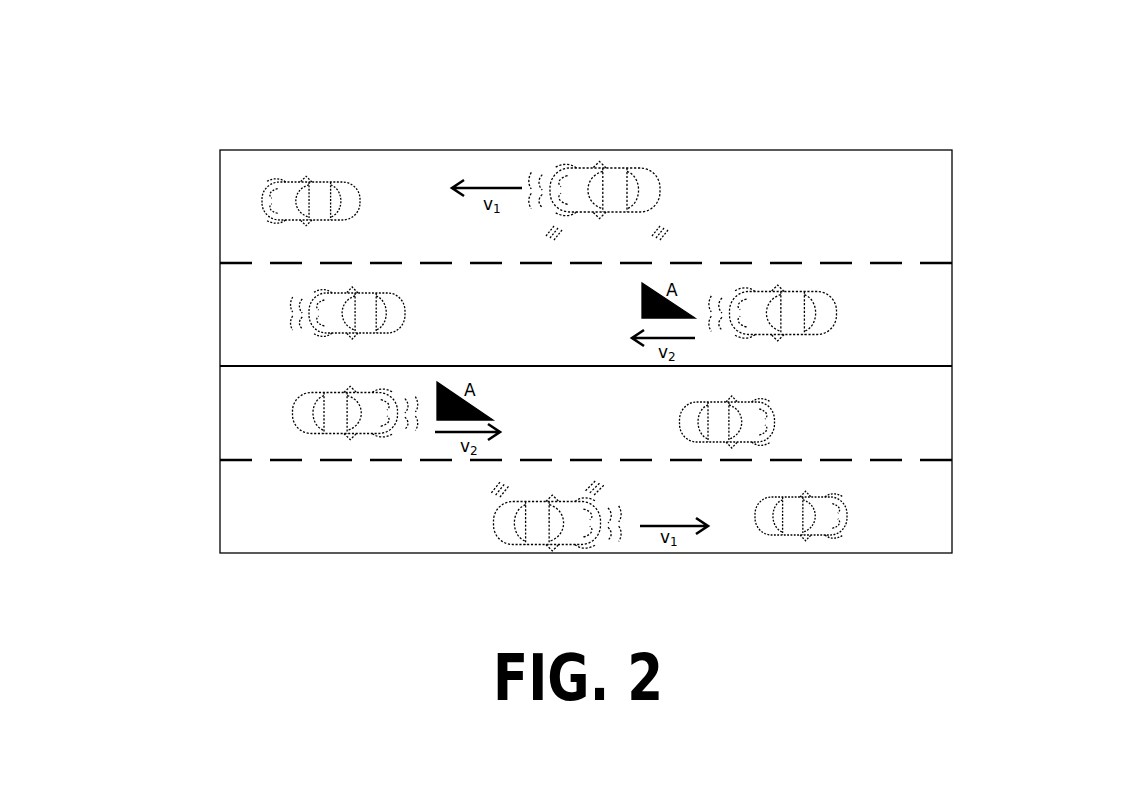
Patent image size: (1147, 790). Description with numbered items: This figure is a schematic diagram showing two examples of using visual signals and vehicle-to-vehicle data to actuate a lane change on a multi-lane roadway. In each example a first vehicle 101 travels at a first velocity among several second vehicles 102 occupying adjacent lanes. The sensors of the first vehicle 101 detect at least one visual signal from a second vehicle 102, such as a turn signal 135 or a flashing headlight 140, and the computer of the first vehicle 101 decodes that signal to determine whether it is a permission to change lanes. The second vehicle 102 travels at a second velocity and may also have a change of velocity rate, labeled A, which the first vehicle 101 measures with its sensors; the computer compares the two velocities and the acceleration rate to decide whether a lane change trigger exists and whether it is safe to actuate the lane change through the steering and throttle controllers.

The first vehicle 101 is at (615, 162).
The second vehicle 102 is at (332, 182).
The turn signal 135 is at (670, 225).
The headlight 140 is at (546, 165).